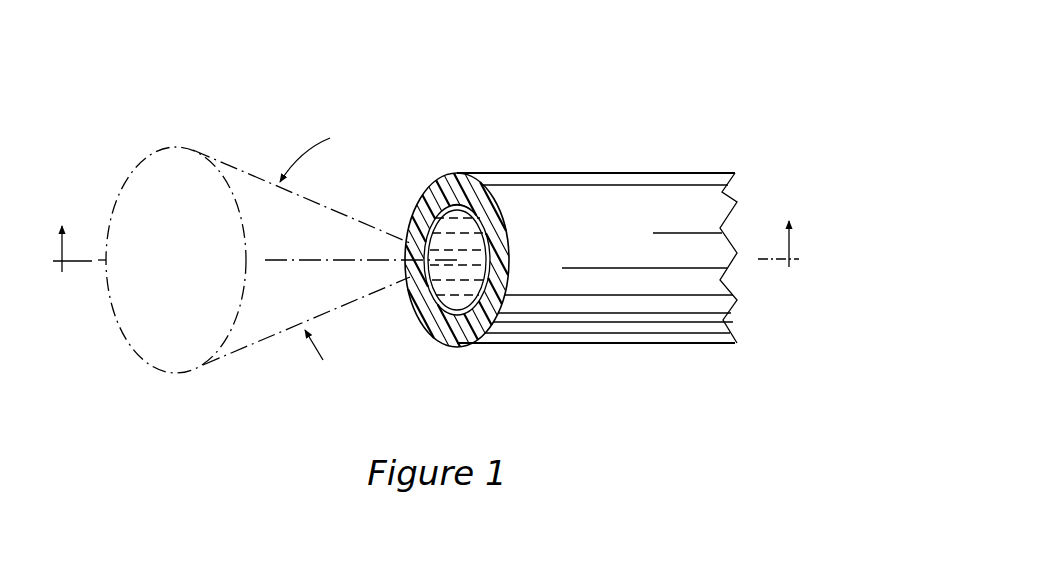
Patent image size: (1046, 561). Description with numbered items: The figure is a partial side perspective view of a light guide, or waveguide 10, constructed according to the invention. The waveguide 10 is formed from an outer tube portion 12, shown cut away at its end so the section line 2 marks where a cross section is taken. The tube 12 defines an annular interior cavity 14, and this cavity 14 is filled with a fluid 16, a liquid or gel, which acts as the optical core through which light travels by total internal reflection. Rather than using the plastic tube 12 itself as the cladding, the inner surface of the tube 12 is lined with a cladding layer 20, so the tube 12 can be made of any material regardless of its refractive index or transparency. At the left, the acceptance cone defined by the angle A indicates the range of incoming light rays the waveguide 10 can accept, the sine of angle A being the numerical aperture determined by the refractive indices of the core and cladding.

The section line 2- 2 is at (426, 262).
The acceptance cone angle A is at (293, 222).
The waveguide 10 is at (640, 150).
The outer tube portion 12 is at (619, 307).
The annular interior cavity 14 is at (444, 279).
The fluid 16 is at (455, 300).
The cladding layer 20 is at (470, 207).